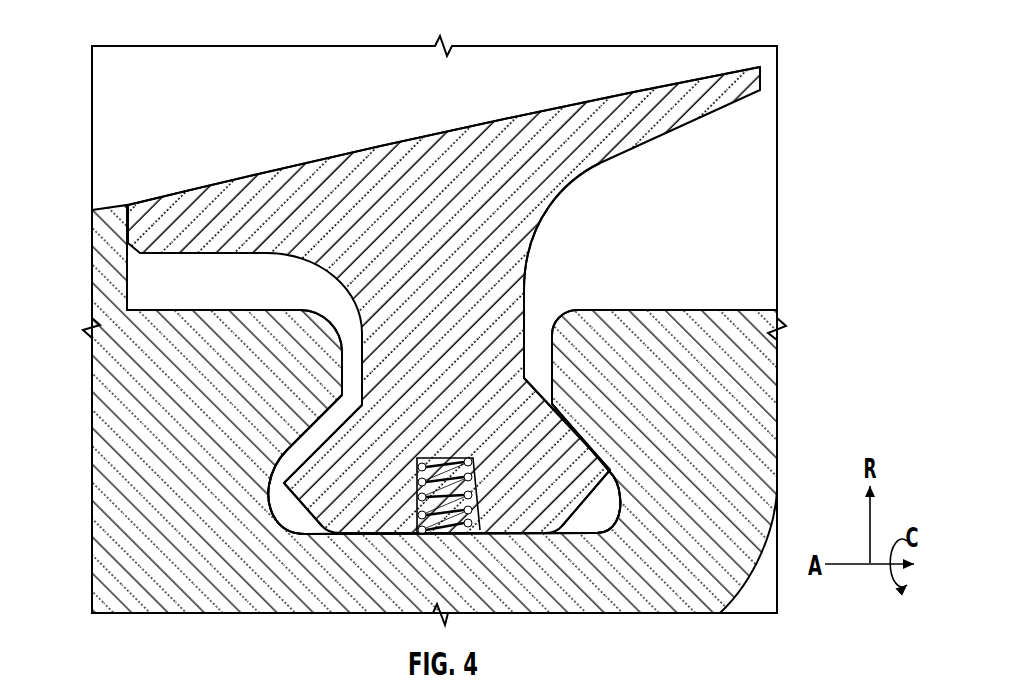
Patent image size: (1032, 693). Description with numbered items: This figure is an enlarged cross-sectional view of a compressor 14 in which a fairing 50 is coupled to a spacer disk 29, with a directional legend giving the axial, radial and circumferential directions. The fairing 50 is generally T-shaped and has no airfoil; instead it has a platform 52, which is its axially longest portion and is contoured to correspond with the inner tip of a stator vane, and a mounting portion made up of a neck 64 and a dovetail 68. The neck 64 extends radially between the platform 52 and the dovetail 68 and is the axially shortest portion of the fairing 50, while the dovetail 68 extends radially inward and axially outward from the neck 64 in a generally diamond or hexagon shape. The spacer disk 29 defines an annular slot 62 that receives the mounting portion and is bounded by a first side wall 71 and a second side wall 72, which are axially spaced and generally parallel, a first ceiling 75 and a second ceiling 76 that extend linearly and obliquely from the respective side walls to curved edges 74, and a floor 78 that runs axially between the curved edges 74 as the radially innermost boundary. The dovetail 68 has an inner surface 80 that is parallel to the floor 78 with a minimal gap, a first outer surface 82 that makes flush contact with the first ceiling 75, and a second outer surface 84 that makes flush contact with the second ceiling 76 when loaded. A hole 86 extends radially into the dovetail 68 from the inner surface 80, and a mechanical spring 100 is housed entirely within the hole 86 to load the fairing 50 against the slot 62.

The compressor 14 is at (846, 142).
The spacer disk 29 is at (112, 508).
The fairing 50 is at (427, 344).
The platform 52 is at (400, 163).
The slot 62 is at (288, 529).
The neck 64 is at (502, 288).
The dovetail 68 is at (583, 470).
The first side wall 71 is at (340, 360).
The second side wall 72 is at (553, 363).
The curved edges 74 is at (267, 508).
The first ceiling 75 is at (313, 433).
The second ceiling 76 is at (583, 470).
The floor 78 is at (520, 538).
The inner surface 80 is at (382, 530).
The first outer surface 82 is at (293, 467).
The second outer surface 84 is at (557, 427).
The hole 86 is at (413, 538).
The mechanical spring 100 is at (460, 537).